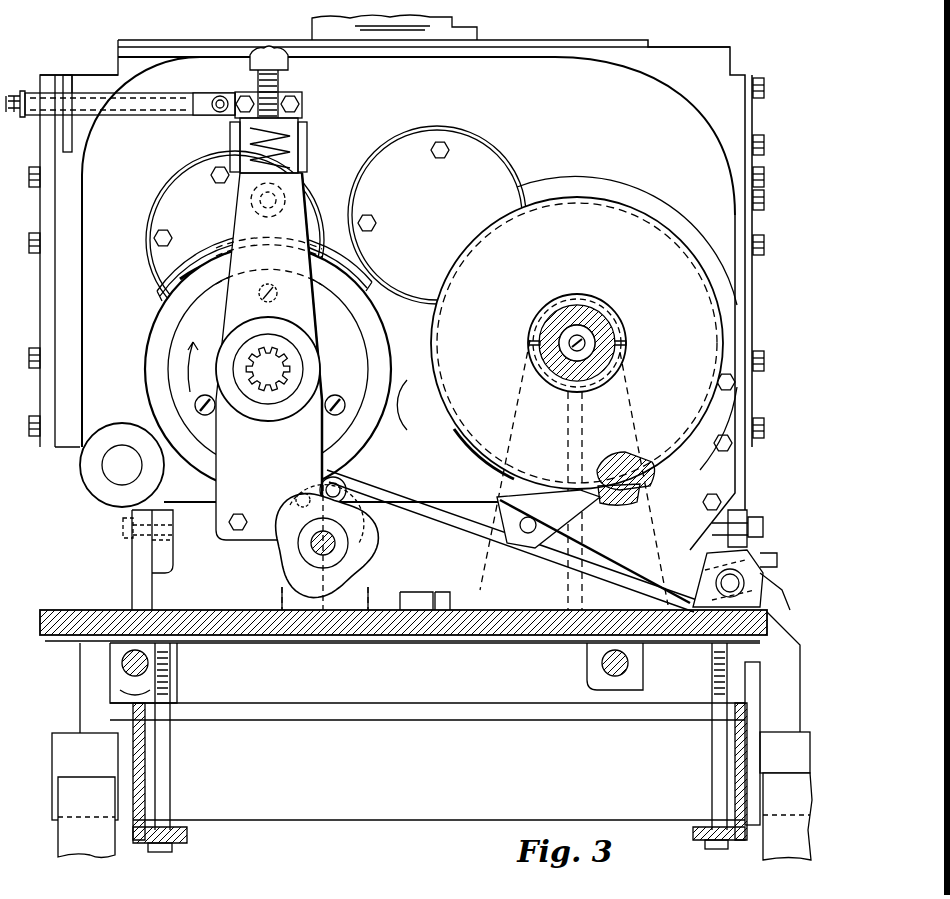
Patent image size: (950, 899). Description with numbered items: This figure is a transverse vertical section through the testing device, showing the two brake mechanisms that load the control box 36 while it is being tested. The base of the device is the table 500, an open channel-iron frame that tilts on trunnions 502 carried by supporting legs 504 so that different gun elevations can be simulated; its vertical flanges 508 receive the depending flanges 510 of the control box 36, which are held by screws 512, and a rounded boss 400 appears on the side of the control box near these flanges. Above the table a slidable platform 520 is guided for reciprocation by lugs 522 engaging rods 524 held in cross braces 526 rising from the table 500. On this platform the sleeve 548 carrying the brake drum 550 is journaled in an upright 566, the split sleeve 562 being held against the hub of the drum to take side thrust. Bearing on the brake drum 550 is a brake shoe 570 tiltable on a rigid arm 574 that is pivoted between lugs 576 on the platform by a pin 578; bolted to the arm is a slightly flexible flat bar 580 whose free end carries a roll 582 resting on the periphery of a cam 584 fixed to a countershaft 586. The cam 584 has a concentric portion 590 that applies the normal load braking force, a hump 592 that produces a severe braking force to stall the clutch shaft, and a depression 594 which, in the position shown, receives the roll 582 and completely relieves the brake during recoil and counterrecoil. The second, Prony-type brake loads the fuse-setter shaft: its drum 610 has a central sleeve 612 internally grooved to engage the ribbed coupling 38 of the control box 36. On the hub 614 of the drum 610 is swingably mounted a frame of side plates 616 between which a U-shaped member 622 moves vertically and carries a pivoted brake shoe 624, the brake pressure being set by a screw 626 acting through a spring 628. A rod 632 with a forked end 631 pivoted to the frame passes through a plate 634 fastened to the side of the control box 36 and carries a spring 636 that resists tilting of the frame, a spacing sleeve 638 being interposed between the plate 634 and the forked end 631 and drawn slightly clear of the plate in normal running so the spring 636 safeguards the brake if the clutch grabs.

The control box 36 is at (645, 72).
The ribbed coupling 38 is at (278, 369).
The boss 400 is at (113, 472).
The table 500 is at (188, 837).
The trunnions 502 is at (62, 742).
The supporting legs 504 is at (91, 843).
The vertical flanges 508 is at (742, 513).
The depending flanges 510 is at (165, 550).
The screws 512 is at (757, 527).
The slidable platform 520 is at (548, 630).
The lugs 522 is at (143, 686).
The rods 524 is at (150, 661).
The cross braces 526 is at (485, 697).
The sleeve 548 is at (560, 330).
The brake drum 550 is at (650, 232).
The split sleeve 562 is at (590, 315).
The upright 566 is at (648, 488).
The brake shoe 570 is at (614, 503).
The rigid arm 574 is at (648, 543).
The lugs 576 is at (690, 576).
The pin 578 is at (730, 583).
The flat bar 580 is at (400, 503).
The roll 582 is at (347, 487).
The cam 584 is at (328, 583).
The countershaft 586 is at (333, 546).
The concentric portion 590 is at (290, 583).
The hump 592 is at (373, 523).
The depression 594 is at (312, 500).
The drum 610 is at (167, 306).
The central sleeve 612 is at (292, 354).
The hub 614 is at (250, 328).
The plates 616 is at (233, 453).
The U-shaped member 622 is at (232, 139).
The brake shoe 624 is at (345, 262).
The screw 626 is at (290, 60).
The spring 628 is at (308, 146).
The forked end 631 is at (259, 92).
The rod 632 is at (143, 114).
The plate 634 is at (48, 76).
The spring 636 is at (27, 92).
The spacing sleeve 638 is at (172, 97).